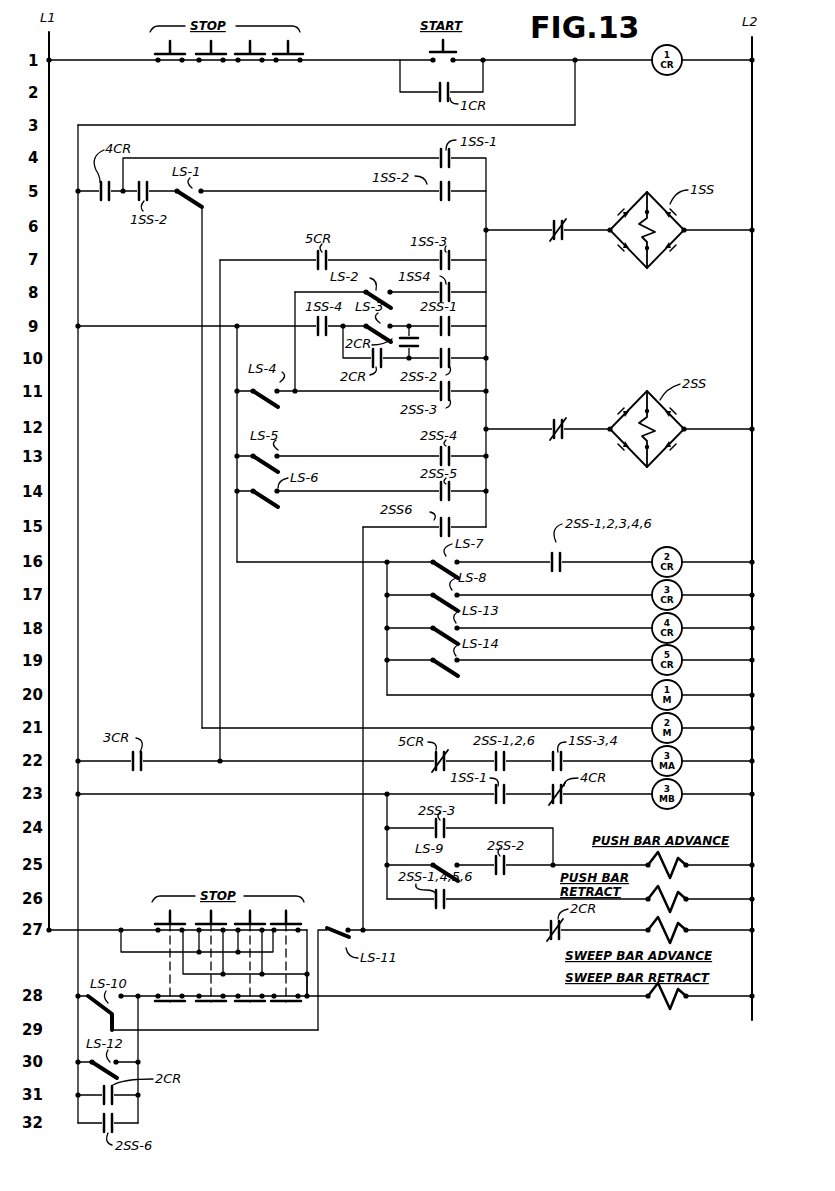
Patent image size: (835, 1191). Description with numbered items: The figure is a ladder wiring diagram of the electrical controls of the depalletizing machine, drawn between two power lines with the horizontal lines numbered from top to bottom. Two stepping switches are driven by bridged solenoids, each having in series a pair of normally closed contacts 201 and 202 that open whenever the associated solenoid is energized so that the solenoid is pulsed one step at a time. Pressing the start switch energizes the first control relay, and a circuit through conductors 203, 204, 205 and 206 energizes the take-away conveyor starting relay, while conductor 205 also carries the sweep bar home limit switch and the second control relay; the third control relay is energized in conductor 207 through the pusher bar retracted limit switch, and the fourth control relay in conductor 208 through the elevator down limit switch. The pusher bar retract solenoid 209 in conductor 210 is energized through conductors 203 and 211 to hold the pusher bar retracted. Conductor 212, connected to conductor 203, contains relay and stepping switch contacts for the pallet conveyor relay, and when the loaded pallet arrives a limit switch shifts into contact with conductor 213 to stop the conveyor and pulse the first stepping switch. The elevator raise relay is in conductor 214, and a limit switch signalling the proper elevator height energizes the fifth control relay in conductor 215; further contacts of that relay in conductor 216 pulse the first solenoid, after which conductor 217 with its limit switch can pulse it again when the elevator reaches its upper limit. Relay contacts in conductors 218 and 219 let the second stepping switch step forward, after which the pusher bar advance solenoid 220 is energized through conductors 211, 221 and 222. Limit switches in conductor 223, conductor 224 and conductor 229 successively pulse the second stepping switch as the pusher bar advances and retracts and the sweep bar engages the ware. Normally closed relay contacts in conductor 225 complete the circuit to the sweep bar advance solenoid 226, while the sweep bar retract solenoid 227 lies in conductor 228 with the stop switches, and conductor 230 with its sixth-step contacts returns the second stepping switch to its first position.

The normally closed contacts 201 is at (560, 218).
The normally closed contacts 202 is at (564, 416).
The conductor 203 is at (300, 122).
The conductor 204 is at (152, 324).
The conductor 205 is at (304, 568).
The conductor 206 is at (454, 694).
The conductor 207 is at (610, 592).
The conductor 208 is at (610, 625).
The pusher bar retract solenoid 209 is at (682, 893).
The conductor 210 is at (532, 898).
The conductor 211 is at (546, 728).
The conductor 212 is at (114, 201).
The conductor 213 is at (312, 192).
The conductor 214 is at (184, 760).
The conductor 215 is at (607, 657).
The conductor 216 is at (264, 255).
The conductor 217 is at (288, 292).
The conductor 218 is at (342, 358).
The conductor 219 is at (420, 334).
The pusher bar advance solenoid 220 is at (655, 860).
The conductor 221 is at (499, 826).
The conductor 222 is at (590, 852).
The conductor 223 is at (339, 392).
The conductor 224 is at (388, 455).
The conductor 225 is at (584, 930).
The sweep bar advance solenoid 226 is at (682, 924).
The sweep bar retract solenoid 227 is at (650, 1008).
The conductor 228 is at (484, 997).
The conductor 229 is at (398, 490).
The conductor 230 is at (362, 645).